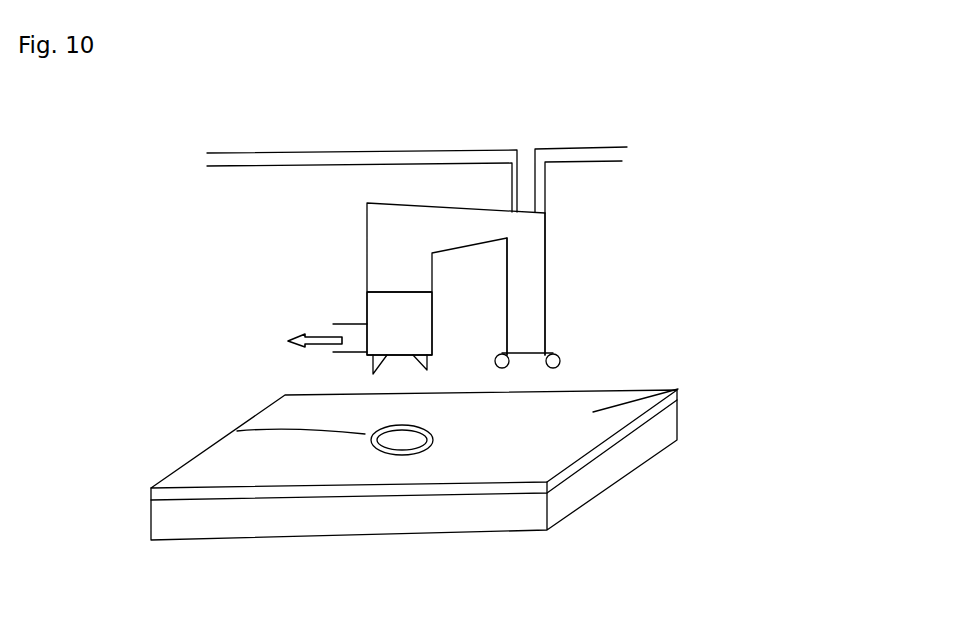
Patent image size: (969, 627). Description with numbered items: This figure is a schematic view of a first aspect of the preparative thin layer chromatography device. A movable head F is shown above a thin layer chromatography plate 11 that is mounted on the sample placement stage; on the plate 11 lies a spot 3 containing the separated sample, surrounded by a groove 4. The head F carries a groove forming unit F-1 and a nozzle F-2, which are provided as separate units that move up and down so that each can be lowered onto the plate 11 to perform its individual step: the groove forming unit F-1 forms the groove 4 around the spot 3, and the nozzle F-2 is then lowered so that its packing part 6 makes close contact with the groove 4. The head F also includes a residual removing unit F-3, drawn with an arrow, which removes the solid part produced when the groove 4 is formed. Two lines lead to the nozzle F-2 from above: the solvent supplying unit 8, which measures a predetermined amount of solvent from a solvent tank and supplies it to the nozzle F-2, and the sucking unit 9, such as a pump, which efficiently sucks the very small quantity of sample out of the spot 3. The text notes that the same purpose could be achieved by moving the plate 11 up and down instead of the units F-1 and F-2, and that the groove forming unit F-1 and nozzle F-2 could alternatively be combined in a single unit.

The spot 3 is at (220, 440).
The groove 4 is at (375, 437).
The packing part 6 is at (558, 352).
The solvent supplying unit 8 is at (280, 166).
The sucking unit 9 is at (595, 152).
The thin layer chromatography plate 11 is at (678, 389).
The head unit F is at (440, 226).
The groove forming unit F-1 is at (392, 309).
The nozzle F-2 is at (528, 296).
The residual removing unit F-3 is at (343, 333).